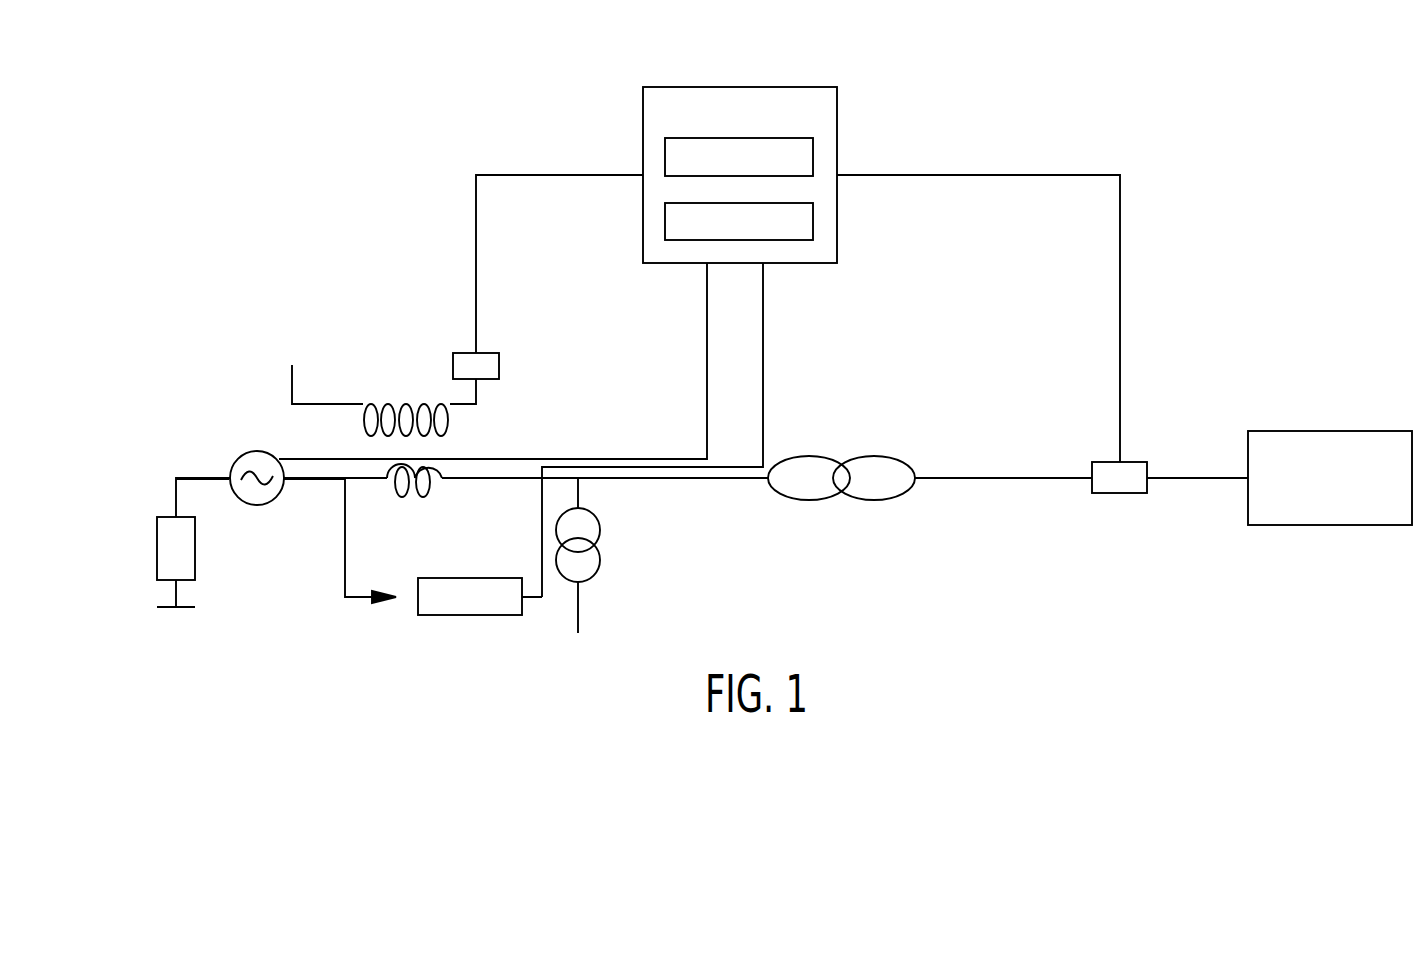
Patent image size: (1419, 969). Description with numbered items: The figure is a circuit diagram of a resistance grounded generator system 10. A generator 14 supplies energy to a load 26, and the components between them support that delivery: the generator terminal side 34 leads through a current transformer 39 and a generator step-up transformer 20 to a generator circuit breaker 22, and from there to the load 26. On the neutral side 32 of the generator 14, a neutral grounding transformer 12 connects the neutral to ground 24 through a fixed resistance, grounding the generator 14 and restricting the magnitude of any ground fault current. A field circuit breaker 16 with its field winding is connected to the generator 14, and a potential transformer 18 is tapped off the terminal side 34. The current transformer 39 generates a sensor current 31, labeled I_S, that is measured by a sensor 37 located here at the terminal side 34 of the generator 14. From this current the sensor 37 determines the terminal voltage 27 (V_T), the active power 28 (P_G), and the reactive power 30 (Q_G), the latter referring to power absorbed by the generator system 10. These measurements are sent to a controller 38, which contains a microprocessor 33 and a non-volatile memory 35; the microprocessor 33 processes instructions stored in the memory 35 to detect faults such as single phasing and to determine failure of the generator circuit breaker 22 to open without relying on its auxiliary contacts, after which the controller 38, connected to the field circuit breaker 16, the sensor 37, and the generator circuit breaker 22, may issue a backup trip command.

The generator system 10 is at (212, 340).
The neutral grounding transformer 12 is at (157, 535).
The generator 14 is at (255, 451).
The field circuit breaker 16 is at (468, 353).
The potential transformer 18 is at (600, 535).
The generator step-up transformer 20 is at (860, 500).
The generator circuit breaker 22 is at (1120, 493).
The ground 24 is at (163, 607).
The load 26 is at (1330, 431).
The terminal voltage 27 is at (393, 647).
The active power 28 is at (442, 665).
The reactive power 30 is at (512, 646).
The sensor current 31 is at (360, 600).
The neutral side 32 is at (196, 476).
The microprocessor 33 is at (813, 156).
The terminal side 34 is at (297, 480).
The memory 35 is at (813, 218).
The sensor 37 is at (470, 578).
The controller 38 is at (740, 87).
The current transformer 39 is at (442, 478).